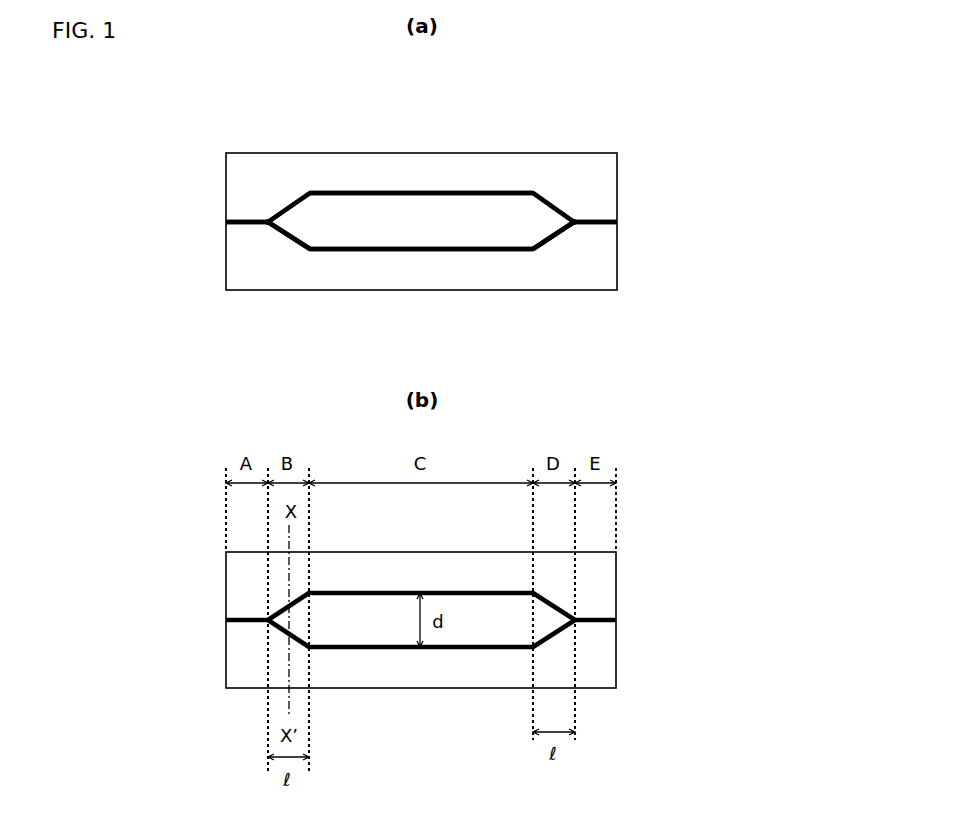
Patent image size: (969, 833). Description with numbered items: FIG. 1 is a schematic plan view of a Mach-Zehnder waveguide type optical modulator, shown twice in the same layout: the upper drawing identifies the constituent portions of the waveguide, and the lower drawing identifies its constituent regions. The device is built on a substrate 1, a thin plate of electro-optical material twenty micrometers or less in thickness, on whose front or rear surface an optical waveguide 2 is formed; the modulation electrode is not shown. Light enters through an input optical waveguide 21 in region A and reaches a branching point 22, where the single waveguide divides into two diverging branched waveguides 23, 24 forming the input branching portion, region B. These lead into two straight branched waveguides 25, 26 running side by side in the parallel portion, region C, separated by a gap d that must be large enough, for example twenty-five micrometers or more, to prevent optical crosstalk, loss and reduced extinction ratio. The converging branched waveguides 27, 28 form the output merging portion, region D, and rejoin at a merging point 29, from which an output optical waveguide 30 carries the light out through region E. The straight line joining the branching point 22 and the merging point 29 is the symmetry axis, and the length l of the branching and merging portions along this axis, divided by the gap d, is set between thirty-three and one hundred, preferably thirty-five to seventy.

The substrate 1 is at (588, 180).
The optical waveguide 2 is at (369, 174).
The input optical waveguide 21 is at (248, 223).
The branching point 22 is at (268, 220).
The branched waveguide 23 is at (293, 202).
The branched waveguide 24 is at (292, 240).
The branched waveguide 25 is at (437, 192).
The branched waveguide 26 is at (437, 253).
The branched waveguide 27 is at (550, 200).
The branched waveguide 28 is at (548, 243).
The merging point 29 is at (577, 223).
The output optical waveguide 30 is at (600, 225).